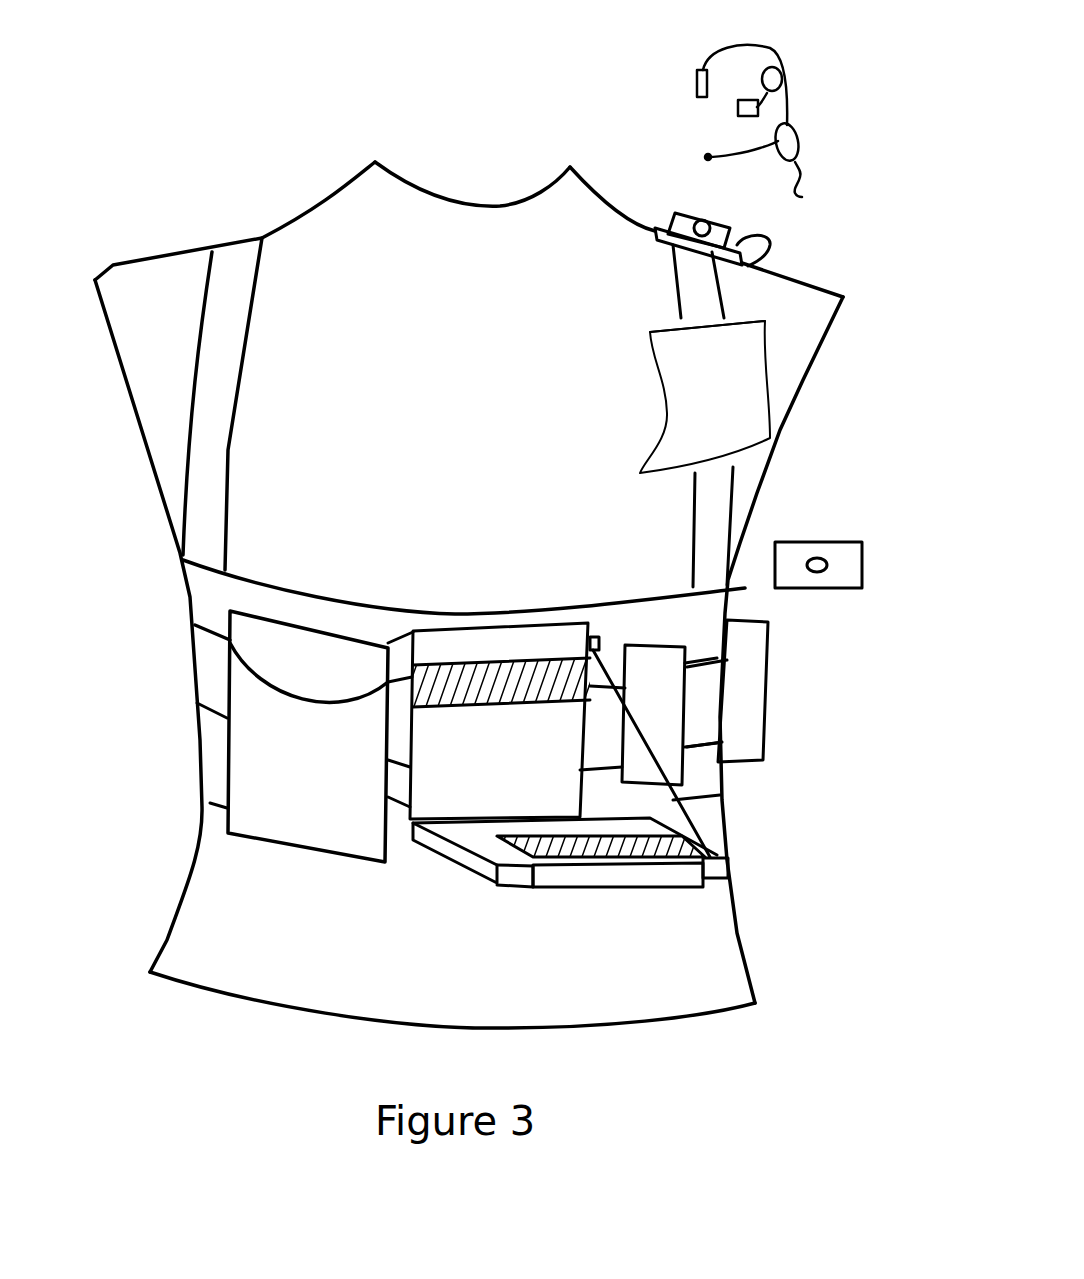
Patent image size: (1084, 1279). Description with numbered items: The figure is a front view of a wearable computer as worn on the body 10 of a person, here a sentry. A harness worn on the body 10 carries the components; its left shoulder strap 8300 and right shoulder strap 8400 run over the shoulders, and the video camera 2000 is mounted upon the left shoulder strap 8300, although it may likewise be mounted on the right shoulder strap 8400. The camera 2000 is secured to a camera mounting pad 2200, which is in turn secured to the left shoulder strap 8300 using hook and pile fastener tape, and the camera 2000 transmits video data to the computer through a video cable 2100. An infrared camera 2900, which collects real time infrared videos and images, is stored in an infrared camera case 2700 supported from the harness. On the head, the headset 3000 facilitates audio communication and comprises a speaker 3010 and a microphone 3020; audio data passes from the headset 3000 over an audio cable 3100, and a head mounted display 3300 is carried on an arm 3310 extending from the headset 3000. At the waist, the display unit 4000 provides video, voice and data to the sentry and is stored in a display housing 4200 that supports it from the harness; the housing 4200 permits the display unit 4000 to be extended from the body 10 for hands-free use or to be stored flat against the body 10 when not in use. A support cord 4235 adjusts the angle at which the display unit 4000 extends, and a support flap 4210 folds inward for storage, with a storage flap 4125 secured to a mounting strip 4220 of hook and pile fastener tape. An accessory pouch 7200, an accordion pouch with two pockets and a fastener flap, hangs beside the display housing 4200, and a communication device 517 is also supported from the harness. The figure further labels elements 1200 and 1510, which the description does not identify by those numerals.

The body 10 is at (780, 378).
The communication device 517 is at (755, 333).
The lower garment portion 1200 is at (167, 830).
The belt 1510 is at (200, 608).
The video camera 2000 is at (690, 210).
The video cable 2100 is at (773, 240).
The camera mounting pad 2200 is at (745, 670).
The infrared camera case 2700 is at (663, 722).
The infrared camera 2900 is at (800, 542).
The headset 3000 is at (645, 88).
The speaker 3010 is at (800, 133).
The microphone 3020 is at (703, 157).
The audio cable 3100 is at (808, 165).
The head mounted display 3300 is at (738, 110).
The arm 3310 is at (782, 58).
The display unit 4000 is at (732, 867).
The storage flap 4125 is at (603, 877).
The display housing 4200 is at (455, 642).
The support flap 4210 is at (523, 888).
The mounting strip 4220 is at (493, 692).
The support cord 4235 is at (727, 793).
The accessory pouch 7200 is at (283, 825).
The left shoulder strap 8300 is at (698, 513).
The right shoulder strap 8400 is at (213, 367).